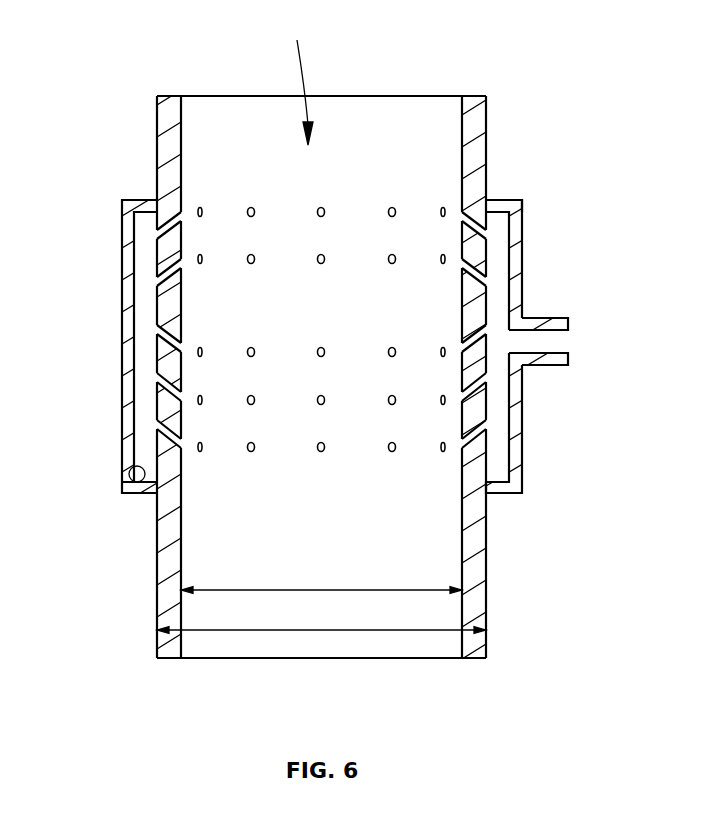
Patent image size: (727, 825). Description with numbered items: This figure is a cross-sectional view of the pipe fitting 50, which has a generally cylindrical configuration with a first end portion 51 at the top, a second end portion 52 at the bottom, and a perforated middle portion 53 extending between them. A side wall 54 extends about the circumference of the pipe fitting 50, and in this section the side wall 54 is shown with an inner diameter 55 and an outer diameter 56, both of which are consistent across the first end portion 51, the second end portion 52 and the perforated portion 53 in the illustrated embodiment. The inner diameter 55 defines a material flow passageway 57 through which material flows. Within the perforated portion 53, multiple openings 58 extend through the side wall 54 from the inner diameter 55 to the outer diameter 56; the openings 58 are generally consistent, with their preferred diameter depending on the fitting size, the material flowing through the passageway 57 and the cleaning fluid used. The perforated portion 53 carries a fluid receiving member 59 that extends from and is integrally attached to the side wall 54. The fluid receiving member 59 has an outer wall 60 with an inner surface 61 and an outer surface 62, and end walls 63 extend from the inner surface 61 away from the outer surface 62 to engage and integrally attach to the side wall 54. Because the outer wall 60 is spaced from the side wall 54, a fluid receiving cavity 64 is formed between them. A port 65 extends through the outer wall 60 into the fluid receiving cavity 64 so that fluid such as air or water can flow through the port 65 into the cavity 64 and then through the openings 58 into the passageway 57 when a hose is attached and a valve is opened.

The pipe fitting 50 is at (316, 353).
The first end portion 51 is at (476, 108).
The second end portion 52 is at (478, 590).
The perforated middle portion 53 is at (555, 455).
The side wall 54 is at (477, 162).
The inner diameter 55 is at (316, 590).
The outer diameter 56 is at (316, 632).
The material flow passageway 57 is at (295, 80).
The openings 58 is at (391, 205).
The fluid receiving member 59 is at (512, 467).
The outer wall 60 is at (120, 433).
The inner surface 61 is at (135, 482).
The outer surface 62 is at (120, 473).
The end walls 63 is at (508, 200).
The fluid receiving cavity 64 is at (497, 440).
The port 65 is at (555, 366).